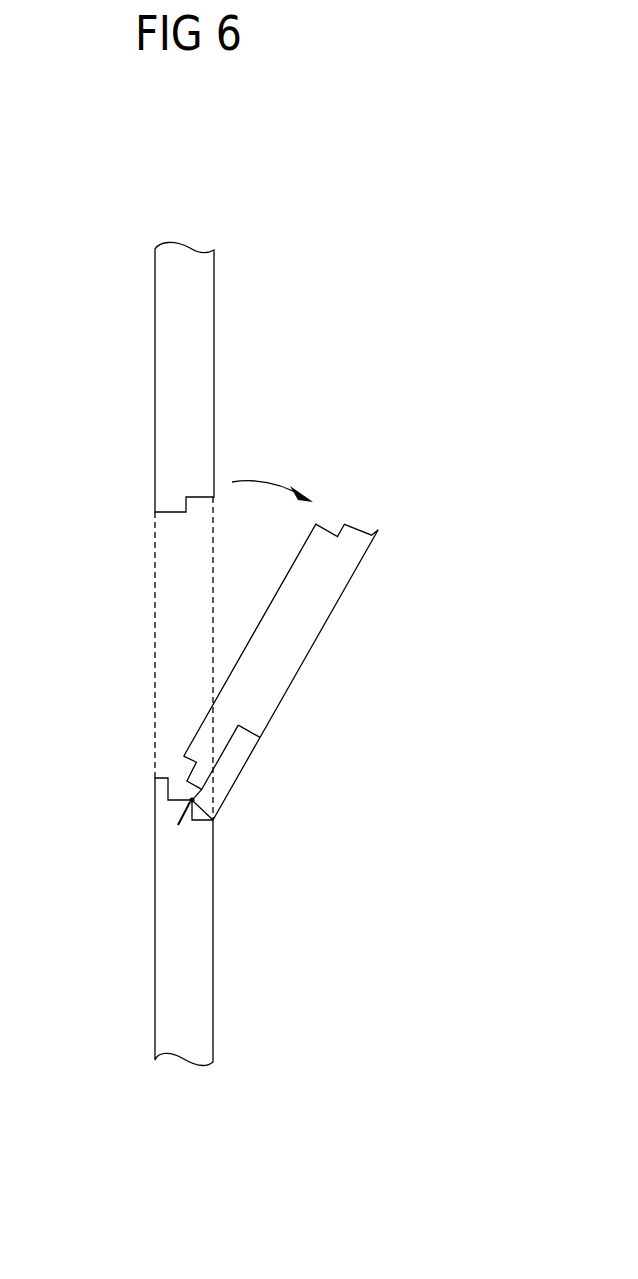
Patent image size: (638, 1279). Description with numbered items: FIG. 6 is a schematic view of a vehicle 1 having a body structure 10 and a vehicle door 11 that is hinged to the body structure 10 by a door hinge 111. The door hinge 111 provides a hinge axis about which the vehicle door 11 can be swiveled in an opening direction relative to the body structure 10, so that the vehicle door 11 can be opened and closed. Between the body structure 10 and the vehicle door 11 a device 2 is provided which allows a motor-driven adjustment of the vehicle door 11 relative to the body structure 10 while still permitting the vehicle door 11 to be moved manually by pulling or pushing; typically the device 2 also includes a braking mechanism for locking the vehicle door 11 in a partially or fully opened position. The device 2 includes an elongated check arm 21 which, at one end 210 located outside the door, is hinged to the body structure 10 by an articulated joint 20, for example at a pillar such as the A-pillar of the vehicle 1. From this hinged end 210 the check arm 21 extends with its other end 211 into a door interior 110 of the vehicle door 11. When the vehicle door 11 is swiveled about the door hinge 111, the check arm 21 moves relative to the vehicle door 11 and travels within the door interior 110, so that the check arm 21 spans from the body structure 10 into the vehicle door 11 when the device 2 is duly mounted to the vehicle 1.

The vehicle 1 is at (250, 232).
The body structure 10 is at (190, 358).
The vehicle door 11 is at (330, 627).
The door interior 110 is at (330, 574).
The door hinge 111 is at (213, 820).
The device 2 is at (165, 747).
The articulated joint 20 is at (180, 795).
The check arm 21 is at (217, 767).
The end of the check arm 210 is at (185, 815).
The end of the check arm 211 is at (240, 726).